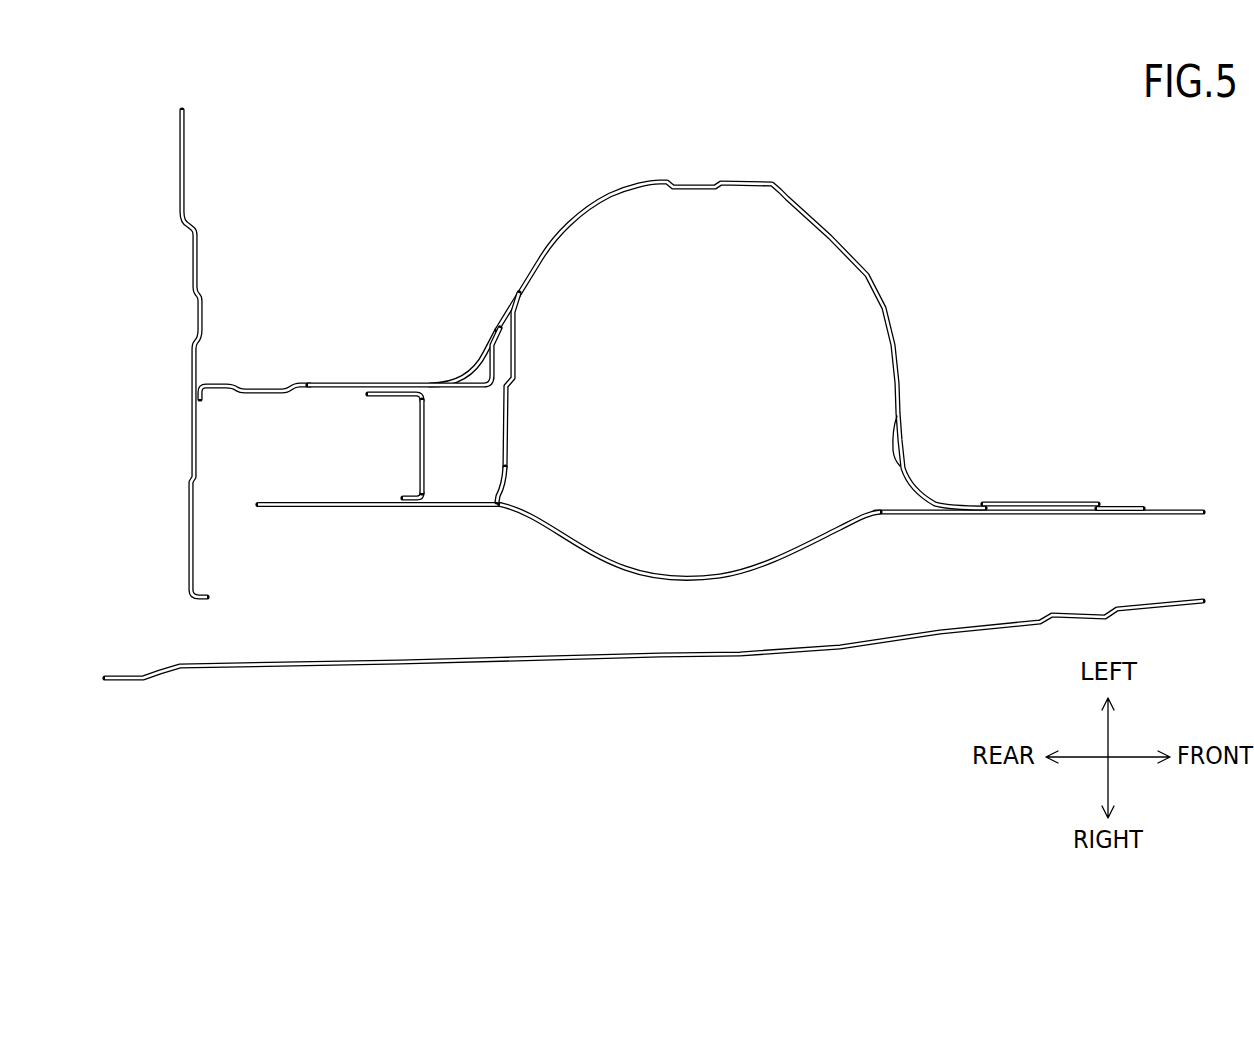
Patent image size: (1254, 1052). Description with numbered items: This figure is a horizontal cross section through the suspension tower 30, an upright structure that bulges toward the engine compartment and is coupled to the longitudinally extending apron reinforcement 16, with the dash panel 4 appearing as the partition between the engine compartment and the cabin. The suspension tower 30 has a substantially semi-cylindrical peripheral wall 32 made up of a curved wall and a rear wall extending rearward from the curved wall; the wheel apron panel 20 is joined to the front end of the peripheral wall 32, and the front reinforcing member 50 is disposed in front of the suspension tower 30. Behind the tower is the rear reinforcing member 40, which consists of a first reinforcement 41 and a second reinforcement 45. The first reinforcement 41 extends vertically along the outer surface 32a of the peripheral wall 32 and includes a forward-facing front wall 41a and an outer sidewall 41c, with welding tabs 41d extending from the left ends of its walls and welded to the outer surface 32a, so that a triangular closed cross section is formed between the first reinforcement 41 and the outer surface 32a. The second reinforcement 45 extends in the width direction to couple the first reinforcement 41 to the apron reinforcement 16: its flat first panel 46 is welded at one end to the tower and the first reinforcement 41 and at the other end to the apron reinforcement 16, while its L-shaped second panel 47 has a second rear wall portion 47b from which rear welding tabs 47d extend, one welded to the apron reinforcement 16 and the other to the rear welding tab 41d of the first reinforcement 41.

The dash panel 4 is at (197, 258).
The apron reinforcement 16 is at (763, 670).
The wheel apron panel 20 is at (1040, 502).
The suspension tower 30 is at (707, 361).
The peripheral wall 32 is at (707, 326).
The outer surface 32a is at (466, 370).
The rear reinforcing member 40 is at (412, 437).
The first reinforcement 41 is at (412, 363).
The front wall 41a is at (498, 356).
The outer sidewall 41c is at (450, 389).
The welding tab 41d is at (368, 391).
The second reinforcement 45 is at (417, 505).
The first panel 46 is at (500, 467).
The second panel 47 is at (376, 480).
The second rear wall portion 47b is at (419, 447).
The rear welding tab 47d is at (387, 397).
The front reinforcing member 50 is at (1127, 506).